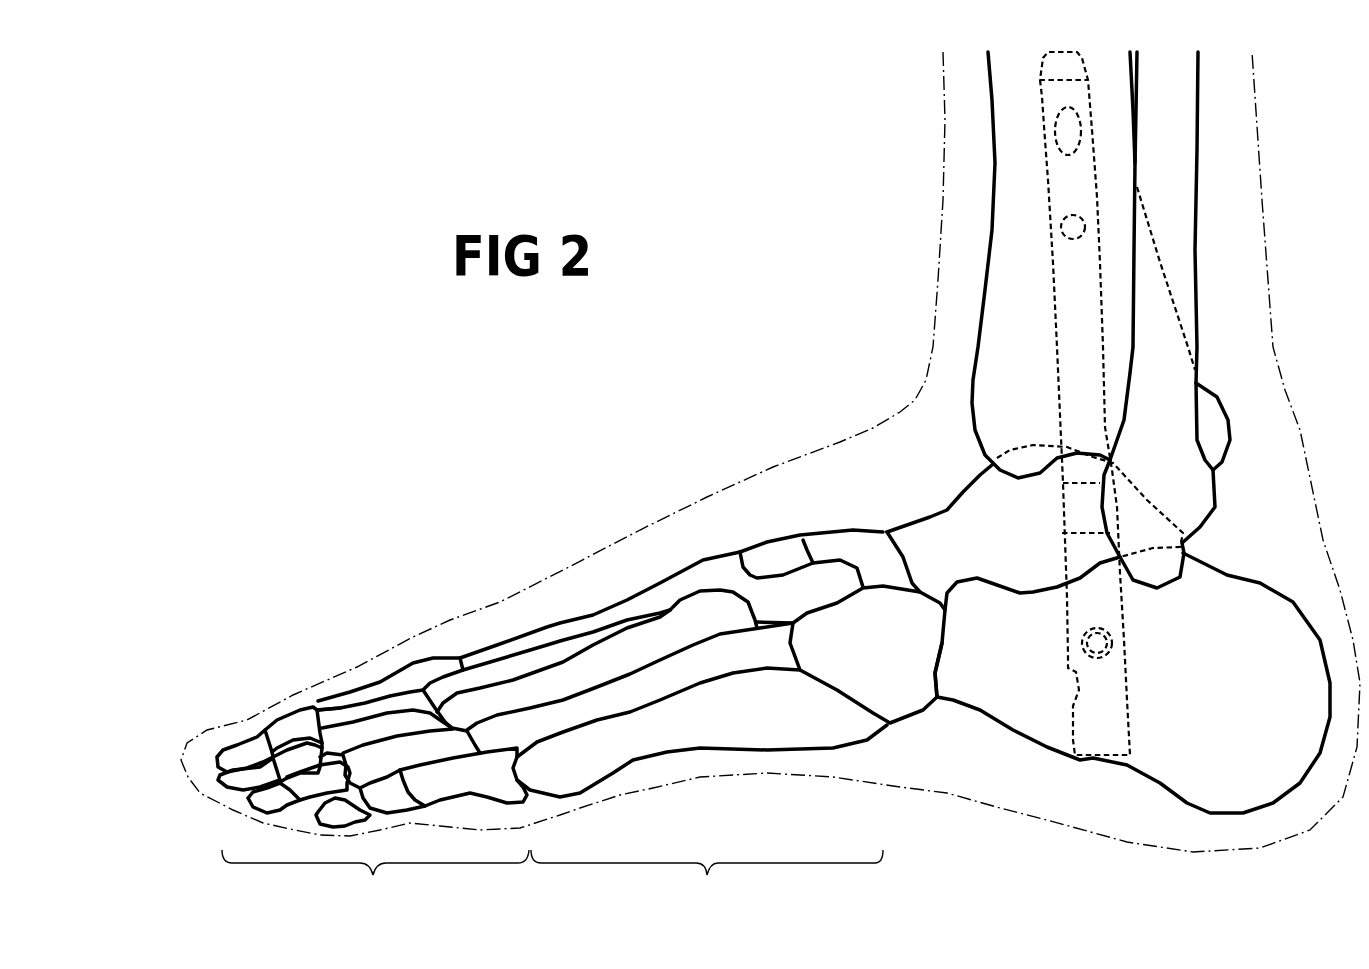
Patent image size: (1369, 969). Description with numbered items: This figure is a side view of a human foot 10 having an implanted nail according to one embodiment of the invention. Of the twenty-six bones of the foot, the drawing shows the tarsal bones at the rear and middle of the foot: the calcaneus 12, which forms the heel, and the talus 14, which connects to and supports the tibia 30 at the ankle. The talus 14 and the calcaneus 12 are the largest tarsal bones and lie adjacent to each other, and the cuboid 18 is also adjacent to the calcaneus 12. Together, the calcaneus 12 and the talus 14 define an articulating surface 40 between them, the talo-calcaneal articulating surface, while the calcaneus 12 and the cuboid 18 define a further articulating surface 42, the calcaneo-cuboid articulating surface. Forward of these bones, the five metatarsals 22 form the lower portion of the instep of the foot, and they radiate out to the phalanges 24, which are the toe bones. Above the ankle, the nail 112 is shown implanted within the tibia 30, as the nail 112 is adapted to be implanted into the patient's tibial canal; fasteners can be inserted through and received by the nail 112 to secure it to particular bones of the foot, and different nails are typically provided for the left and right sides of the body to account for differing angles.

The human foot 10 is at (792, 316).
The calcaneus 12 is at (1255, 715).
The talus 14 is at (1015, 548).
The cuboid 18 is at (896, 668).
The metatarsals 22 is at (662, 719).
The phalanges 24 is at (373, 783).
The tibia 30 is at (997, 350).
The articulating surface 40 is at (1027, 597).
The articulating surface 42 is at (943, 643).
The nail 112 is at (1057, 173).